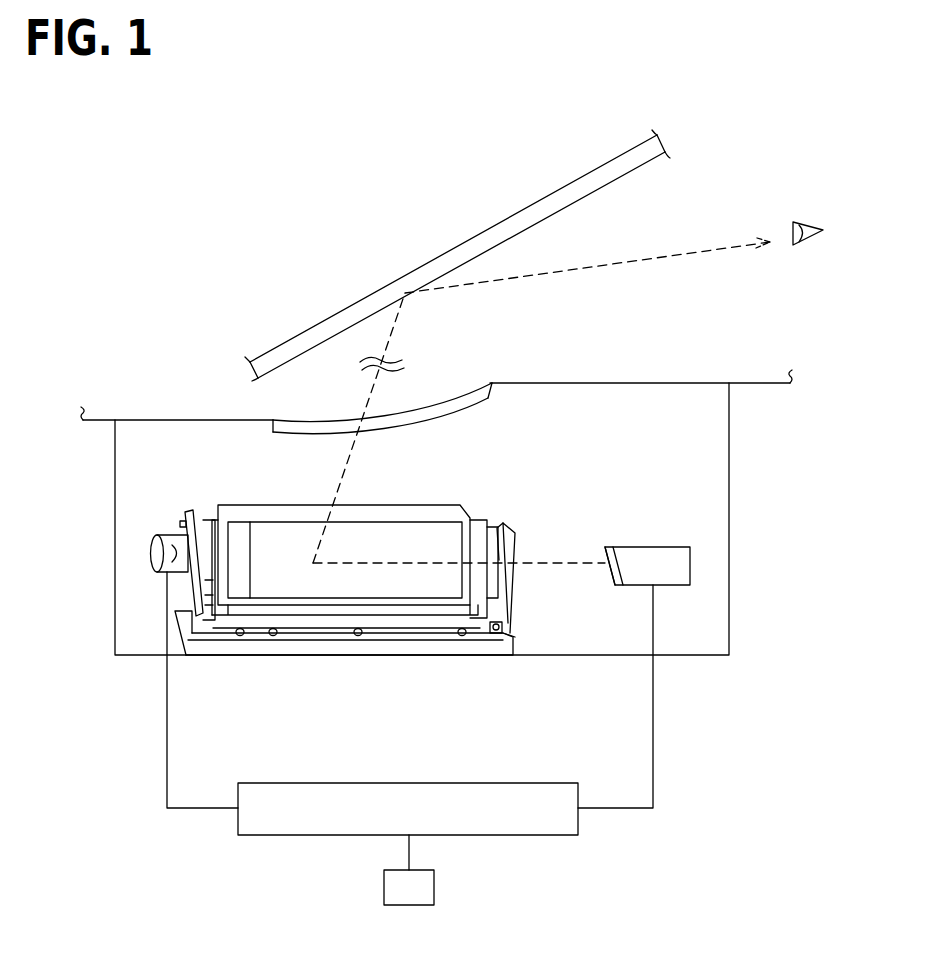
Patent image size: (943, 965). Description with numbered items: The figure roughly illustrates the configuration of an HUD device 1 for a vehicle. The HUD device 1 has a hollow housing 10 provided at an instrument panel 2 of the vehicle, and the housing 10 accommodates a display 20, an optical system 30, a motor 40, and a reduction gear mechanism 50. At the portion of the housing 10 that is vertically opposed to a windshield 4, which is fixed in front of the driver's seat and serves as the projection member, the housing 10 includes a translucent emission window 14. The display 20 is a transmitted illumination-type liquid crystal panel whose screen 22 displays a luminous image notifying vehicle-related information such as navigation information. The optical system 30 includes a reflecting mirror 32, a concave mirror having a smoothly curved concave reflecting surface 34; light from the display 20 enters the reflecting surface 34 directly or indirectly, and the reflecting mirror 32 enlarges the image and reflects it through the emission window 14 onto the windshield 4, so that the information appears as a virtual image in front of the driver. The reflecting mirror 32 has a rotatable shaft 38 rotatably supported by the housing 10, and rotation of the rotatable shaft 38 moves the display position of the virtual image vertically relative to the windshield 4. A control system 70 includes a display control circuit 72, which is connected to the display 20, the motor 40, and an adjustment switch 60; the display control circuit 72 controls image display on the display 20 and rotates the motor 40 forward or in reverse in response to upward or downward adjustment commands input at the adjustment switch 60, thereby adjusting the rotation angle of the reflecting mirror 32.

The HUD device 1 is at (752, 660).
The instrument panel 2 is at (758, 383).
The windshield 4 is at (583, 185).
The housing 10 is at (729, 440).
The emission window 14 is at (472, 388).
The display 20 is at (691, 644).
The screen 22 is at (603, 550).
The optical system 30 is at (200, 492).
The reflecting mirror 32 is at (380, 596).
The reflecting surface 34 is at (280, 593).
The rotatable shaft 38 is at (512, 545).
The motor 40 is at (172, 538).
The reduction gear mechanism 50 is at (158, 578).
The adjustment switch 60 is at (435, 887).
The control system 70 is at (408, 775).
The display control circuit 72 is at (485, 781).